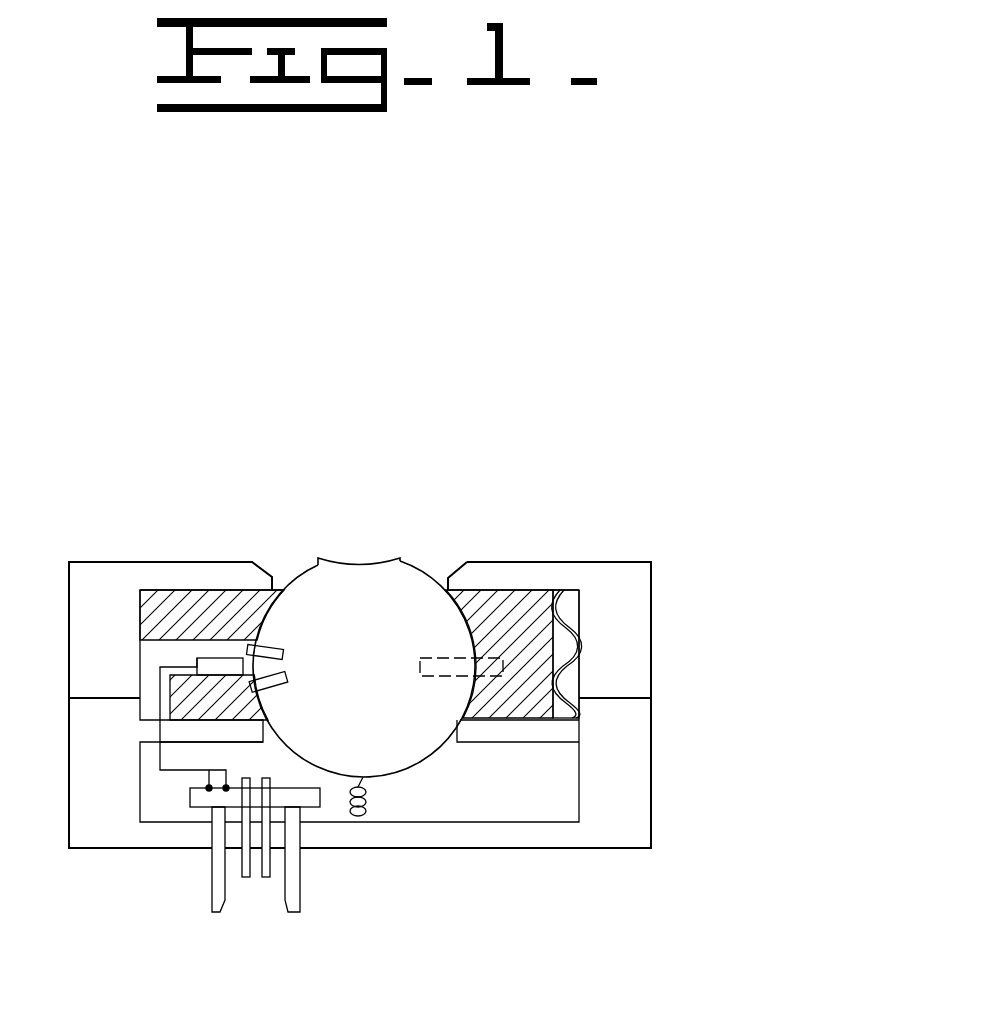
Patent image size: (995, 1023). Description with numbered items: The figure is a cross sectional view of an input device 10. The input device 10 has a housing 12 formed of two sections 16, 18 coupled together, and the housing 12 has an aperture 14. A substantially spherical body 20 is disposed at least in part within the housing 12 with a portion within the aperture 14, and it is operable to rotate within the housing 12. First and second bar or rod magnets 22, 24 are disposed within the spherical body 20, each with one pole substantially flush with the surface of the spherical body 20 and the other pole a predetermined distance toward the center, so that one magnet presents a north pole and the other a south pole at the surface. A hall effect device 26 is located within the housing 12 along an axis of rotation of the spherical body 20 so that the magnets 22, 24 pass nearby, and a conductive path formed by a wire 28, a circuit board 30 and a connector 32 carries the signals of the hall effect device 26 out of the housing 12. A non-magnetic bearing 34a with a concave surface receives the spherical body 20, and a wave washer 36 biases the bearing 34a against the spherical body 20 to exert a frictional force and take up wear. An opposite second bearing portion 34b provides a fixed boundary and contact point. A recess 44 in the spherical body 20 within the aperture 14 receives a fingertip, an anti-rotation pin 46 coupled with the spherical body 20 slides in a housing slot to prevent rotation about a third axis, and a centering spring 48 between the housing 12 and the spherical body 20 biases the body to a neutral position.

The input device 10 is at (409, 568).
The housing 12 is at (758, 655).
The aperture 14 is at (305, 560).
The housing section 16 is at (652, 600).
The housing section 18 is at (653, 748).
The spherical body 20 is at (418, 570).
The first magnet 22 is at (273, 615).
The second magnet 24 is at (272, 685).
The hall effect device 26 is at (218, 658).
The wire 28 is at (160, 756).
The circuit board 30 is at (313, 808).
The connector 32 is at (260, 927).
The non-magnetic bearing 34a is at (495, 597).
The second bearing portion 34b is at (168, 608).
The wave washer 36 is at (560, 602).
The recess 44 is at (360, 562).
The pin 46 is at (430, 677).
The spring 48 is at (368, 808).